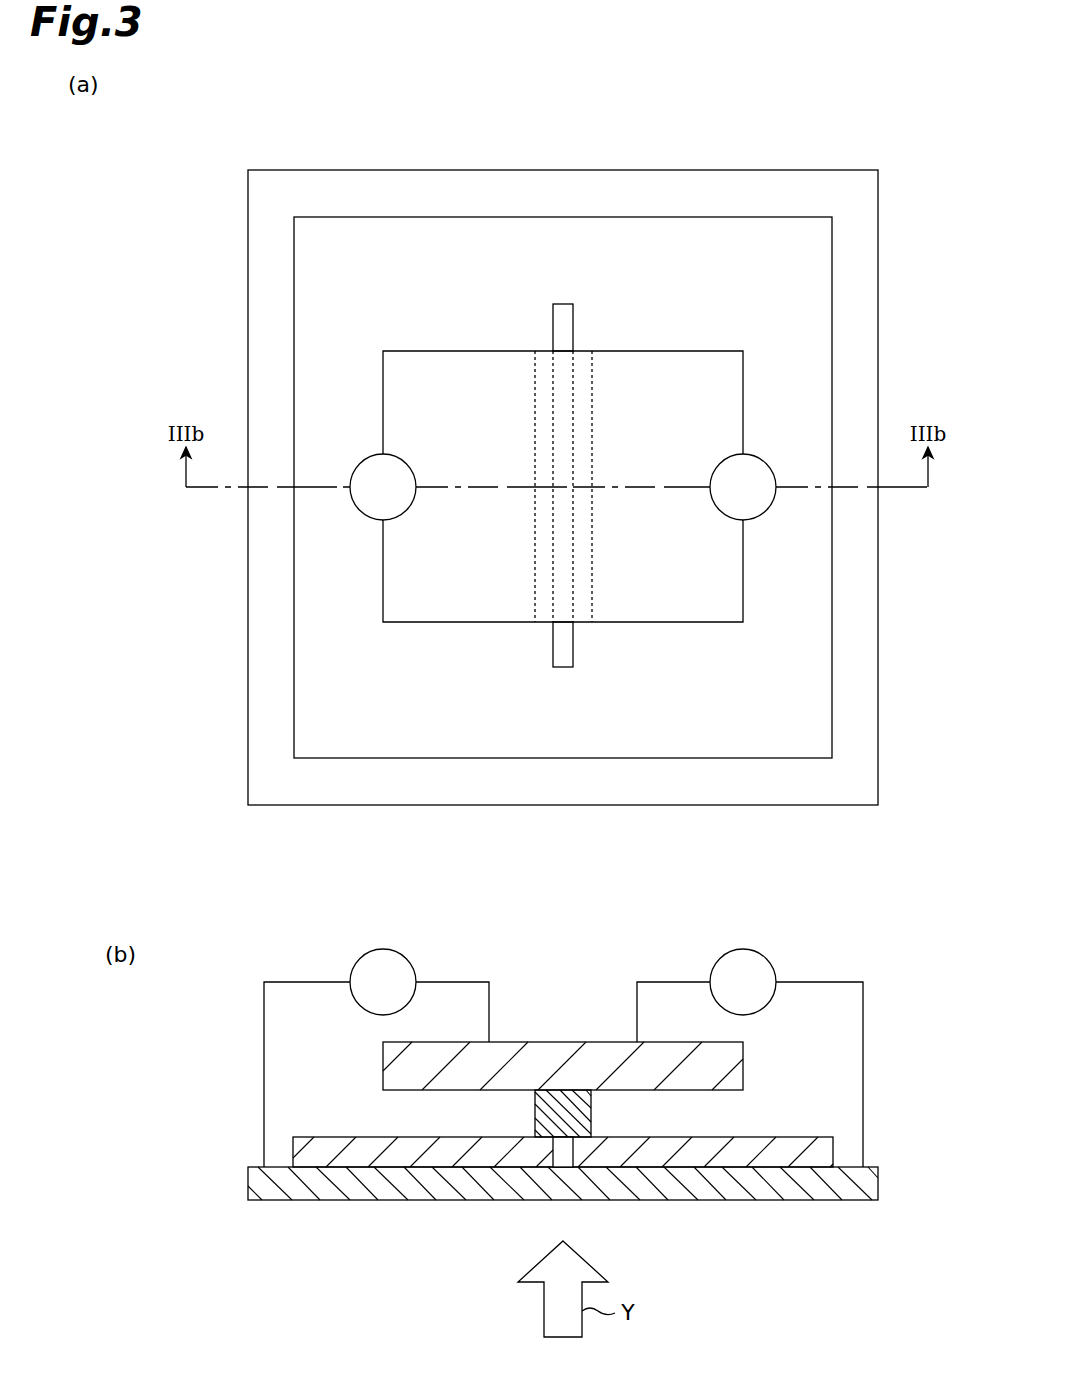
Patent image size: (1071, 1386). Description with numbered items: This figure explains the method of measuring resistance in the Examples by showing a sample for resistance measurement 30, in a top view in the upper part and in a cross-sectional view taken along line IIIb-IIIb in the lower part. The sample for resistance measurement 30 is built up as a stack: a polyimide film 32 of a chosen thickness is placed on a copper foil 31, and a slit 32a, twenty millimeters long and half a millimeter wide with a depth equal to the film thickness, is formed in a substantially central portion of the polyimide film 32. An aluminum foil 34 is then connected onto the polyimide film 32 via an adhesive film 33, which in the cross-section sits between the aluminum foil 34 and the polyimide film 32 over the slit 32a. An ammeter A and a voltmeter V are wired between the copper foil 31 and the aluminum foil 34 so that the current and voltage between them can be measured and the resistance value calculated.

The sample for resistance measurement 30 is at (234, 215).
The copper foil 31 is at (870, 752).
The polyimide film 32 is at (797, 567).
The slit 32a is at (563, 306).
The adhesive film 33 is at (593, 410).
The aluminum foil 34 is at (646, 595).